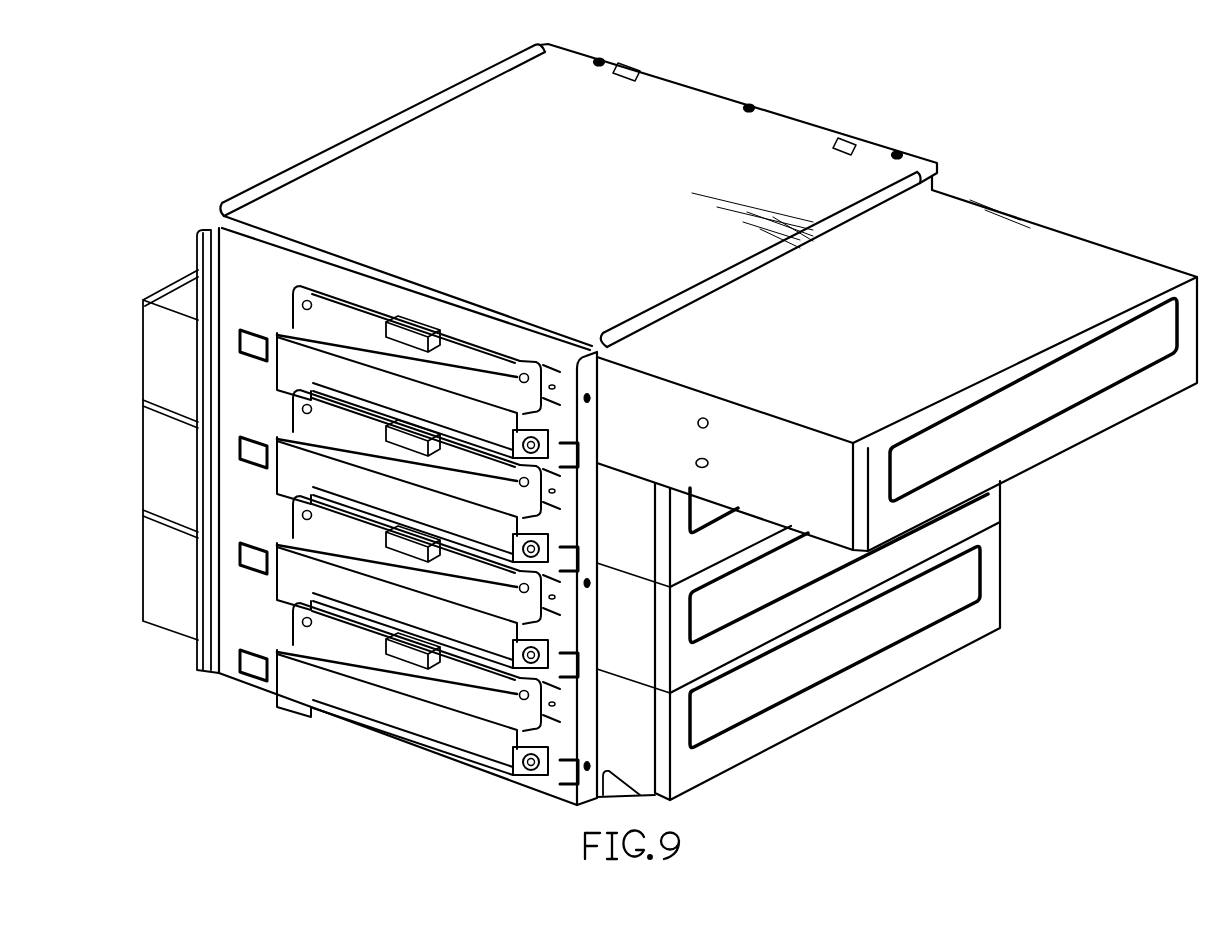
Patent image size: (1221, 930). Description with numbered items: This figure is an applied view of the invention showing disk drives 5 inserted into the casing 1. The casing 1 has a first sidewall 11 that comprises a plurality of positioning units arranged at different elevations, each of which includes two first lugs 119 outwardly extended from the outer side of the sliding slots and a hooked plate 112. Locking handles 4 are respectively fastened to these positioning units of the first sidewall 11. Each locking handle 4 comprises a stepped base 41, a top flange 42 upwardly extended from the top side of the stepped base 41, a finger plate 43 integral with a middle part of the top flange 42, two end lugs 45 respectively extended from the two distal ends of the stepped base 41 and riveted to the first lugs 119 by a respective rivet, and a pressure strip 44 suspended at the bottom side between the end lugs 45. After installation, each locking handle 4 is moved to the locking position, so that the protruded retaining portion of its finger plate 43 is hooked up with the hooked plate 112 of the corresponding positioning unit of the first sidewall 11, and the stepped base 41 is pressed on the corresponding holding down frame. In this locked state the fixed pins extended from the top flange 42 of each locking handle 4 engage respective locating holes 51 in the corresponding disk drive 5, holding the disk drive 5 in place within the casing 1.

The casing 1 is at (797, 112).
The disk drive 5 is at (1062, 247).
The locating hole 51 is at (708, 418).
The locking handle 4 is at (433, 522).
The stepped base 41 is at (502, 400).
The top flange 42 is at (348, 313).
The finger plate 43 is at (290, 333).
The pressure strip 44 is at (290, 407).
The end lug 45 is at (548, 468).
The hooked plate 112 is at (412, 322).
The first lug 119 is at (548, 440).
The first sidewall 11 is at (227, 632).